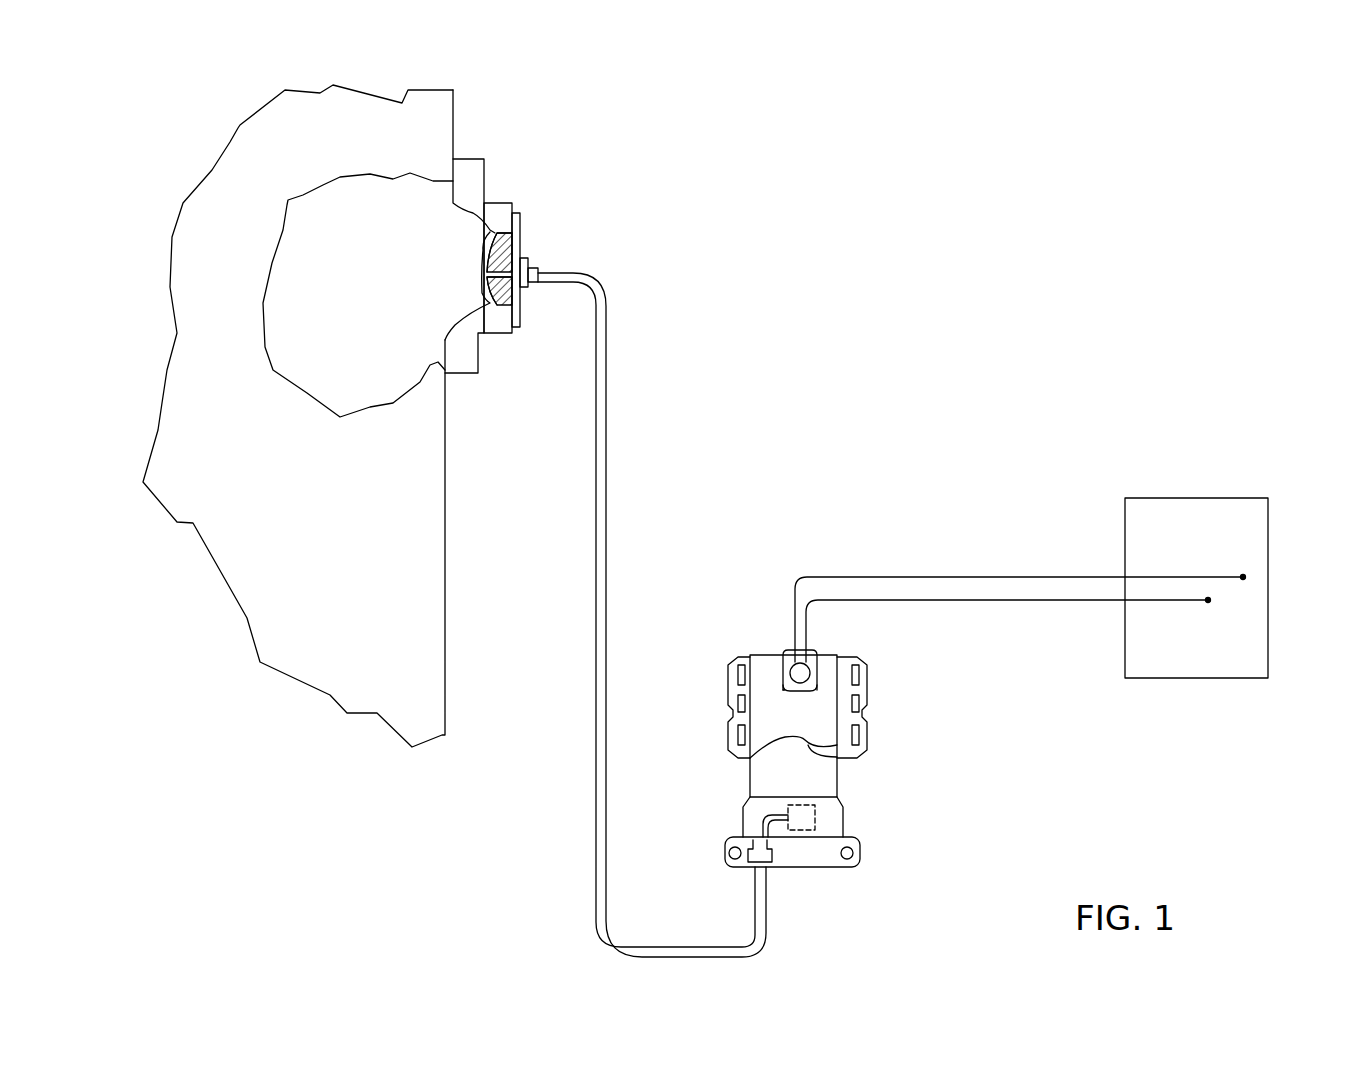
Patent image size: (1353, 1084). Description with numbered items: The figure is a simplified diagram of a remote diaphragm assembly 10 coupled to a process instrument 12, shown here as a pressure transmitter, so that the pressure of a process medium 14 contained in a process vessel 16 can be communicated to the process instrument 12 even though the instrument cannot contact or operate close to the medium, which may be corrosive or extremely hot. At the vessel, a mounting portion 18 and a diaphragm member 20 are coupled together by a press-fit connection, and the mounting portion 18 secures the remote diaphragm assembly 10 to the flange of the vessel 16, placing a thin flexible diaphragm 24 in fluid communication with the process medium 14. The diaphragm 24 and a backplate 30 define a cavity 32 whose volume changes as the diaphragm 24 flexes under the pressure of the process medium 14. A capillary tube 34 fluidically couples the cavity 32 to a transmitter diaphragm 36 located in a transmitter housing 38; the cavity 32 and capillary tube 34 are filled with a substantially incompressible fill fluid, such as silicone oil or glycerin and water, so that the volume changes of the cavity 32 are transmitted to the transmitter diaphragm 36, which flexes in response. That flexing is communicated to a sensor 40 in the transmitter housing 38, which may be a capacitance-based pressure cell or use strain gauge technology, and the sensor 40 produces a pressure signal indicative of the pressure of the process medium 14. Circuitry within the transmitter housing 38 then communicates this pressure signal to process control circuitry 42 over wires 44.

The remote diaphragm assembly 10 is at (516, 183).
The process instrument 12 is at (905, 857).
The process medium 14 is at (335, 371).
The process vessel 16 is at (445, 563).
The mounting portion 18 is at (478, 373).
The diaphragm member 20 is at (513, 203).
The thin flexible diaphragm 24 is at (482, 270).
The backplate 30 is at (493, 245).
The cavity 32 is at (495, 236).
The capillary tube 34 is at (607, 388).
The transmitter diaphragm 36 is at (777, 866).
The transmitter housing 38 is at (832, 658).
The sensor 40 is at (840, 813).
The process control circuitry 42 is at (1223, 498).
The wires 44 is at (935, 600).